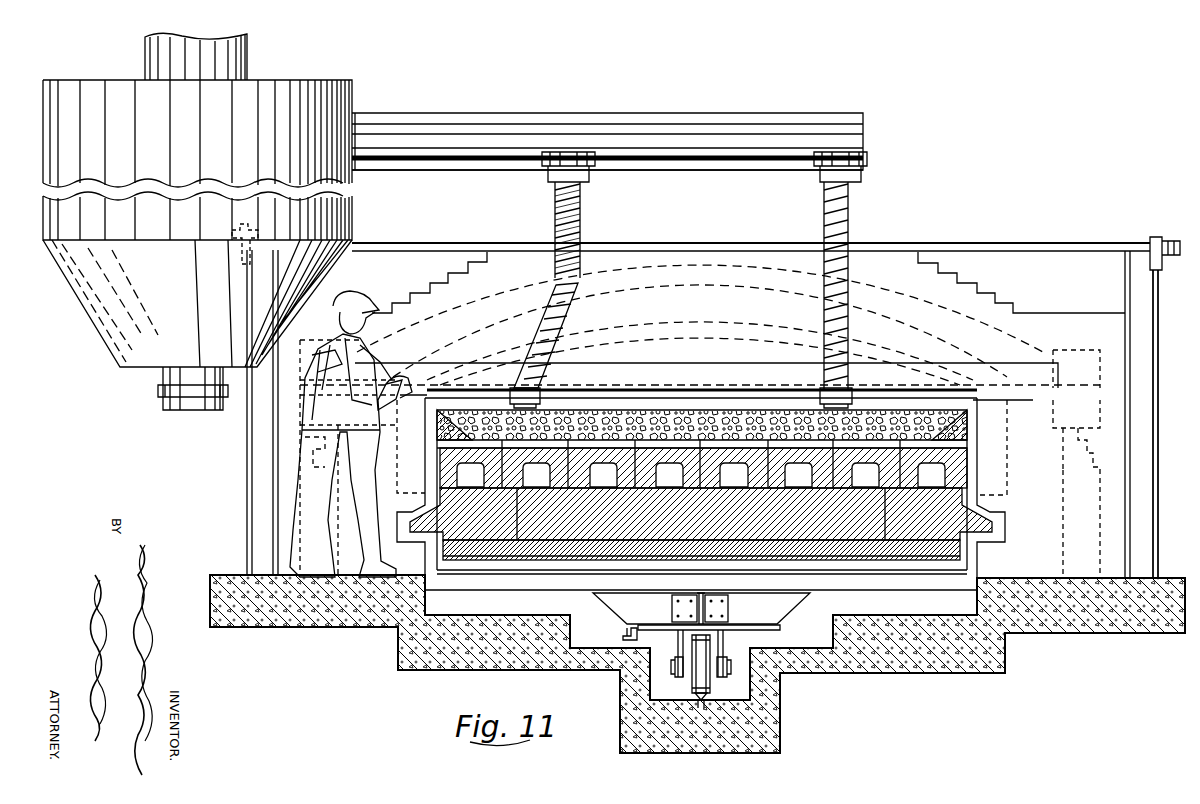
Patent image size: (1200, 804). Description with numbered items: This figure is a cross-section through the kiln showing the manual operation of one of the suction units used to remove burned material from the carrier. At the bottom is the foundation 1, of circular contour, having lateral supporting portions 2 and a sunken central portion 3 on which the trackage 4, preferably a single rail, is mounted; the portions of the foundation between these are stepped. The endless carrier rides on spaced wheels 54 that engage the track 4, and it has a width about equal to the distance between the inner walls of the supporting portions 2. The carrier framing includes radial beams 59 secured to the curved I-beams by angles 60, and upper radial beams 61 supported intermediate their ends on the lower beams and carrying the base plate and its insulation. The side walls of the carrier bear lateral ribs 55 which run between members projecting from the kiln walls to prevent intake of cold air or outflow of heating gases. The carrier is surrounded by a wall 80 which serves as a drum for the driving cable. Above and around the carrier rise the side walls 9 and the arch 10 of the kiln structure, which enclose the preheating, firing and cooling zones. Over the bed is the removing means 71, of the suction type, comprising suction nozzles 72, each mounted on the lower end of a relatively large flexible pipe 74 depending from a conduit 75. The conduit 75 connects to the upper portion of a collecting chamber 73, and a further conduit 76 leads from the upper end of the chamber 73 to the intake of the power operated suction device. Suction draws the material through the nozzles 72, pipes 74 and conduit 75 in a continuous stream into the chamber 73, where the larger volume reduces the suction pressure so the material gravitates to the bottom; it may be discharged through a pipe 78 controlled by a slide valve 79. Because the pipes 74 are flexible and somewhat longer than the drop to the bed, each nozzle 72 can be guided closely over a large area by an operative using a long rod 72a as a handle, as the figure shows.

The foundation 1 is at (697, 664).
The lateral supporting portions 2 is at (300, 628).
The sunken central portion 3 is at (780, 721).
The trackage 4 is at (696, 696).
The side walls 9 is at (1132, 478).
The arch 10 is at (955, 322).
The wheels 54 is at (712, 676).
The lateral ribs 55 is at (1000, 531).
The radial beams 59 is at (788, 600).
The angles 60 is at (672, 606).
The upper radial beams 61 is at (856, 586).
The means for removing the burned material 71 is at (766, 396).
The suction nozzles 72 is at (541, 401).
The long rod 72a is at (700, 459).
The collecting chamber 73 is at (197, 223).
The flexible pipe 74 is at (580, 218).
The conduit 75 is at (608, 128).
The conduit 76 is at (236, 60).
The pipe 78 is at (163, 405).
The slide valve 79 is at (158, 391).
The wall 80 is at (637, 635).